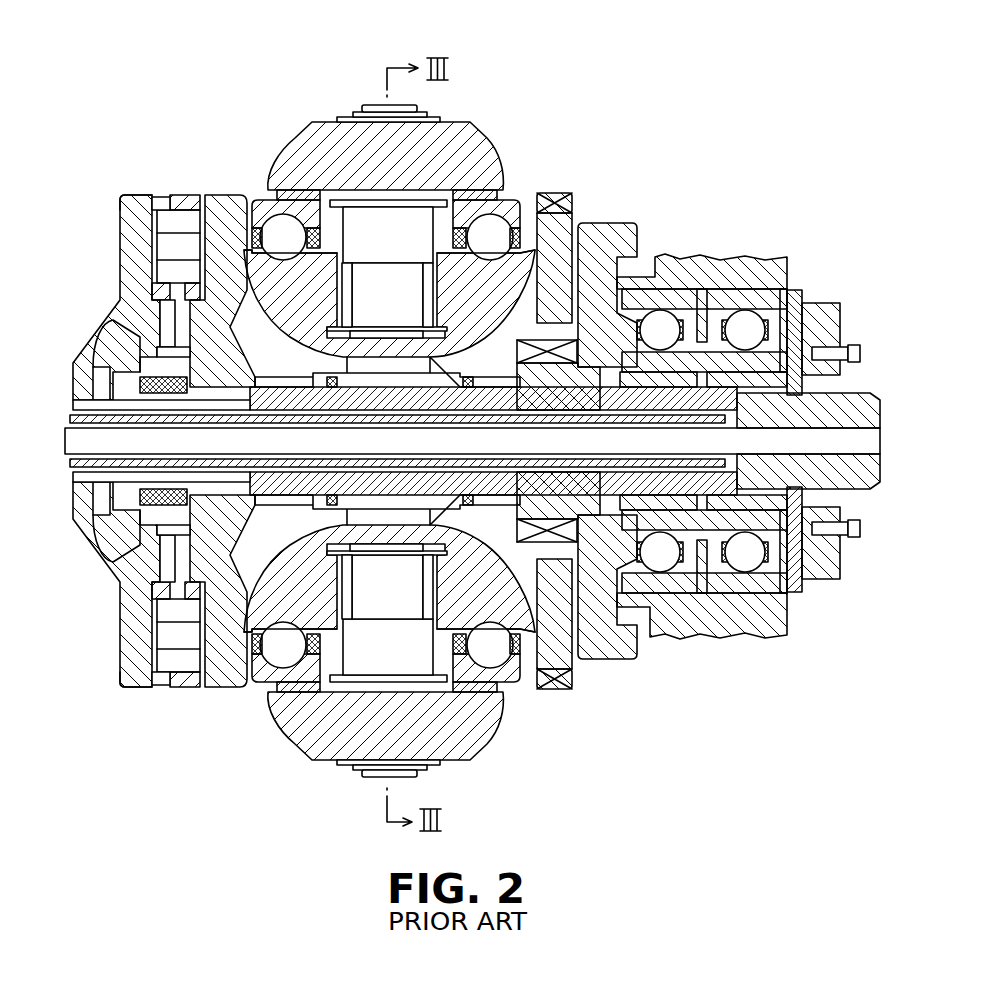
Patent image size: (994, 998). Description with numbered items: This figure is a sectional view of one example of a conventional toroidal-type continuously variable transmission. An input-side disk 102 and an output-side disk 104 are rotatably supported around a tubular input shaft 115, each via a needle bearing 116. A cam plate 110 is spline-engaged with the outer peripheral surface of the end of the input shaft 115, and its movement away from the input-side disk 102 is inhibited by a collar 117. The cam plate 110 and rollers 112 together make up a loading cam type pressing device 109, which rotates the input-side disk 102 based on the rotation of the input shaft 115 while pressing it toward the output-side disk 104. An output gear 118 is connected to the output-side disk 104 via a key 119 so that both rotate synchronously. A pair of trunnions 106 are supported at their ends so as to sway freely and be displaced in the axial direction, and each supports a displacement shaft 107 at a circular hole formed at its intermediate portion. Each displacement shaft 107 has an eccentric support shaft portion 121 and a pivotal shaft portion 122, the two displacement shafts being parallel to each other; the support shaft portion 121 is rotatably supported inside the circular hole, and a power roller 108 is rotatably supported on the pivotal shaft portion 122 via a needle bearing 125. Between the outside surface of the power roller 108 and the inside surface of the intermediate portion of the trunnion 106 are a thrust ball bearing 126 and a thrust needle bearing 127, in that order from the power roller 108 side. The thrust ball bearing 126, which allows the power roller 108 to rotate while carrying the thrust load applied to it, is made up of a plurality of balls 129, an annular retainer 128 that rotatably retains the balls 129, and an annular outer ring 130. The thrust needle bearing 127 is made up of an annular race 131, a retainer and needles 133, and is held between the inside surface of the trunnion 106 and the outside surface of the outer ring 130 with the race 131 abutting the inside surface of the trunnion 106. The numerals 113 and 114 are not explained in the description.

The input-side disk 102 is at (217, 200).
The output-side disk 104 is at (578, 200).
The trunnion 106 is at (453, 127).
The displacement shaft 107 is at (407, 249).
The power roller 108 is at (295, 290).
The loading cam type pressing device 109 is at (125, 242).
The cam plate 110 is at (128, 201).
The rollers 112 is at (180, 218).
The flange 113 is at (118, 204).
The cap 114 is at (197, 196).
The input shaft 115 is at (867, 405).
The needle bearing 116 is at (387, 367).
The collar 117 is at (106, 340).
The output gear 118 is at (632, 227).
The key 119 is at (547, 364).
The support shaft portion 121 is at (376, 102).
The pivotal shaft portion 122 is at (407, 306).
The needle bearing 125 is at (428, 283).
The thrust ball bearing 126 is at (497, 226).
The thrust needle bearing 127 is at (484, 186).
The annular retainer 128 is at (570, 196).
The balls 129 is at (612, 268).
The annular outer ring 130 is at (263, 207).
The annular race 131 is at (313, 200).
The needles 133 is at (303, 192).